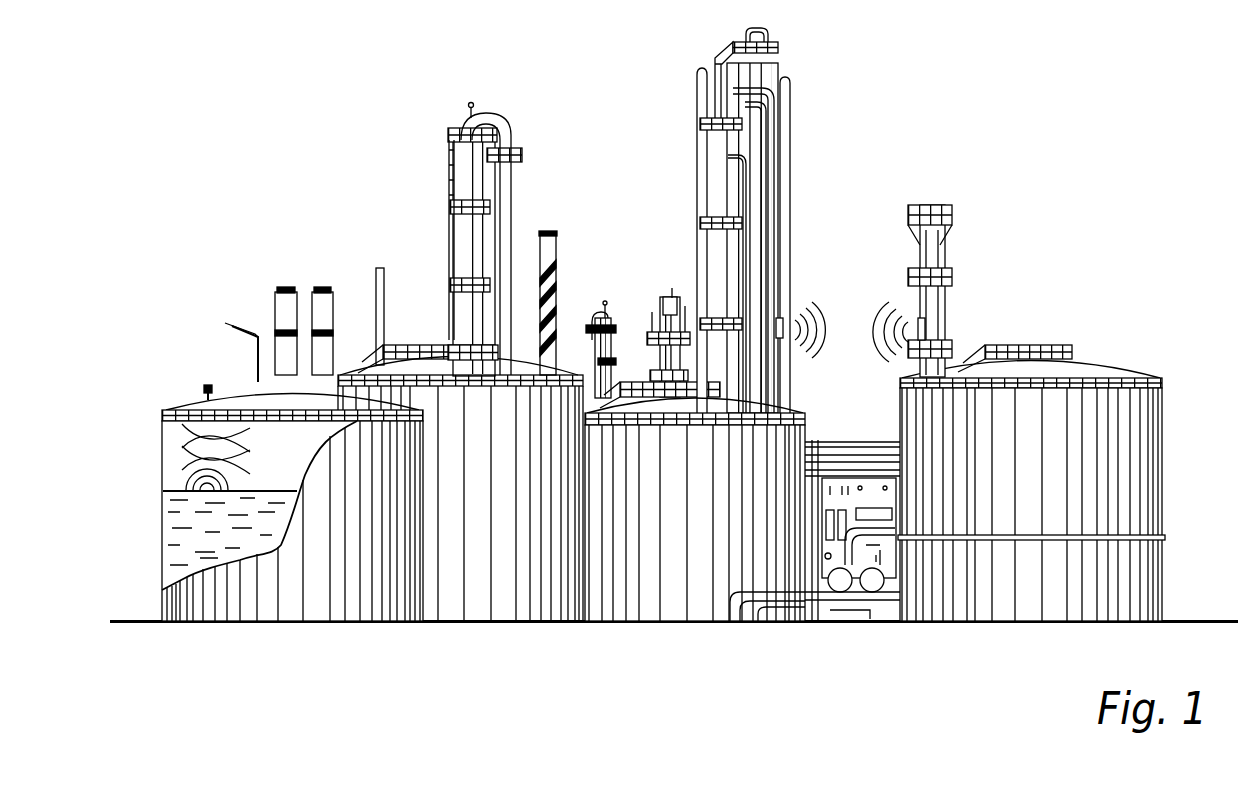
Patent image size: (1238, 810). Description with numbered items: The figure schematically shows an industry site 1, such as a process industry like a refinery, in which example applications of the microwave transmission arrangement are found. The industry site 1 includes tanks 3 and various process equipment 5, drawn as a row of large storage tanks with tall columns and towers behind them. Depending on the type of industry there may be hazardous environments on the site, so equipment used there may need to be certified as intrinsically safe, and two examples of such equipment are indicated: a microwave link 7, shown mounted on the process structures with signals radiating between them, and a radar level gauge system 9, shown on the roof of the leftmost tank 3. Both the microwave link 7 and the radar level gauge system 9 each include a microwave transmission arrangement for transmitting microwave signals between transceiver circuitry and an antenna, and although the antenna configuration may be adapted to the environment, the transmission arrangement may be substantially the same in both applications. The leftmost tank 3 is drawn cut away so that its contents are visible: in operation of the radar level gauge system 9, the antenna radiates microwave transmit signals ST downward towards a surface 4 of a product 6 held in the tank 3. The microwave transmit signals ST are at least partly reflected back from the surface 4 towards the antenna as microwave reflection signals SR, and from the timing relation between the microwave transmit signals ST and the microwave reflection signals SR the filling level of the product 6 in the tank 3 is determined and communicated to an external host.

The industry site 1 is at (674, 343).
The tank 3 is at (324, 565).
The surface 4 is at (167, 491).
The process equipment 5 is at (628, 236).
The product 6 is at (212, 560).
The microwave link 7 is at (814, 284).
The radar level gauge system 9 is at (217, 364).
The microwave transmit signals ST is at (173, 453).
The microwave reflection signals SR is at (245, 484).